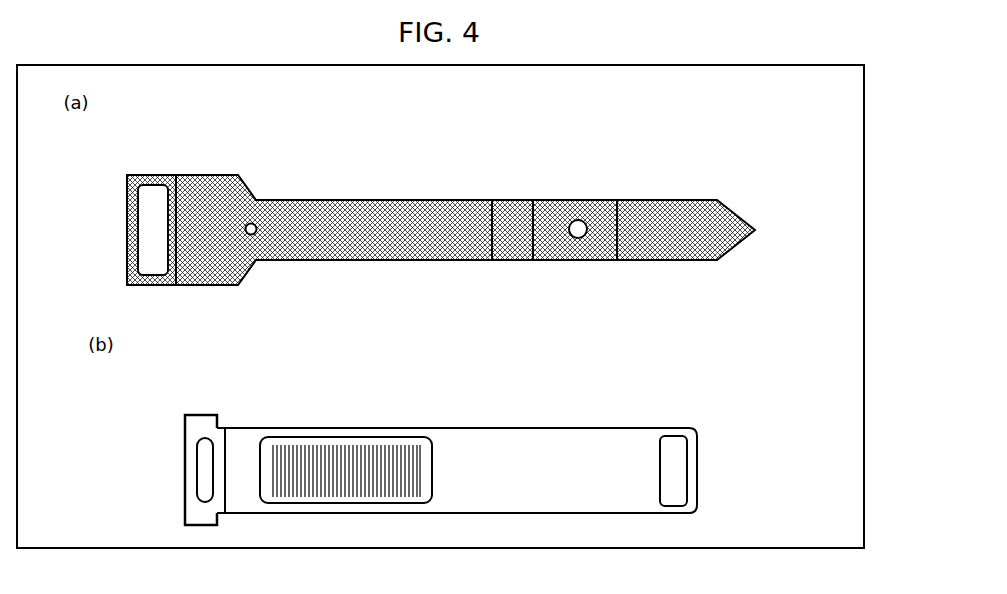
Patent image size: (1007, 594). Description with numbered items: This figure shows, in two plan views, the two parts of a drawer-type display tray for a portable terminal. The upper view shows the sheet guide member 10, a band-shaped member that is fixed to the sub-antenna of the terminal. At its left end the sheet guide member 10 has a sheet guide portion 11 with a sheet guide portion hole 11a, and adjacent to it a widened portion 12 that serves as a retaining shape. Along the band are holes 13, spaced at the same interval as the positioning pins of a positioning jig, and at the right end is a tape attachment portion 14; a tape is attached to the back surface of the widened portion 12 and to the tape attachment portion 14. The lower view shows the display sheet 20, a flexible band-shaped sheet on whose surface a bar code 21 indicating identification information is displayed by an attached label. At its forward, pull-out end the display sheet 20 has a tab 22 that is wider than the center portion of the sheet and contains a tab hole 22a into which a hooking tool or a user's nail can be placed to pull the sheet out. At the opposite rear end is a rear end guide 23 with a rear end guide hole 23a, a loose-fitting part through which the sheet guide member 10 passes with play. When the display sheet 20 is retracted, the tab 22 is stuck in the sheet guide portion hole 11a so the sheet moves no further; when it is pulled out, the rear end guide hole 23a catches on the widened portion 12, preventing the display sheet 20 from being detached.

The sheet guide member 10 is at (408, 218).
The sheet guide portion 11 is at (114, 201).
The sheet guide portion hole 11a is at (145, 242).
The widened portion 12 is at (207, 178).
The holes 13 is at (254, 237).
The tape attachment portion 14 is at (675, 250).
The display sheet 20 is at (442, 447).
The bar code 21 is at (347, 445).
The tab 22 is at (168, 447).
The tab hole 22a is at (203, 470).
The rear end guide 23 is at (712, 471).
The rear end guide hole 23a is at (677, 487).